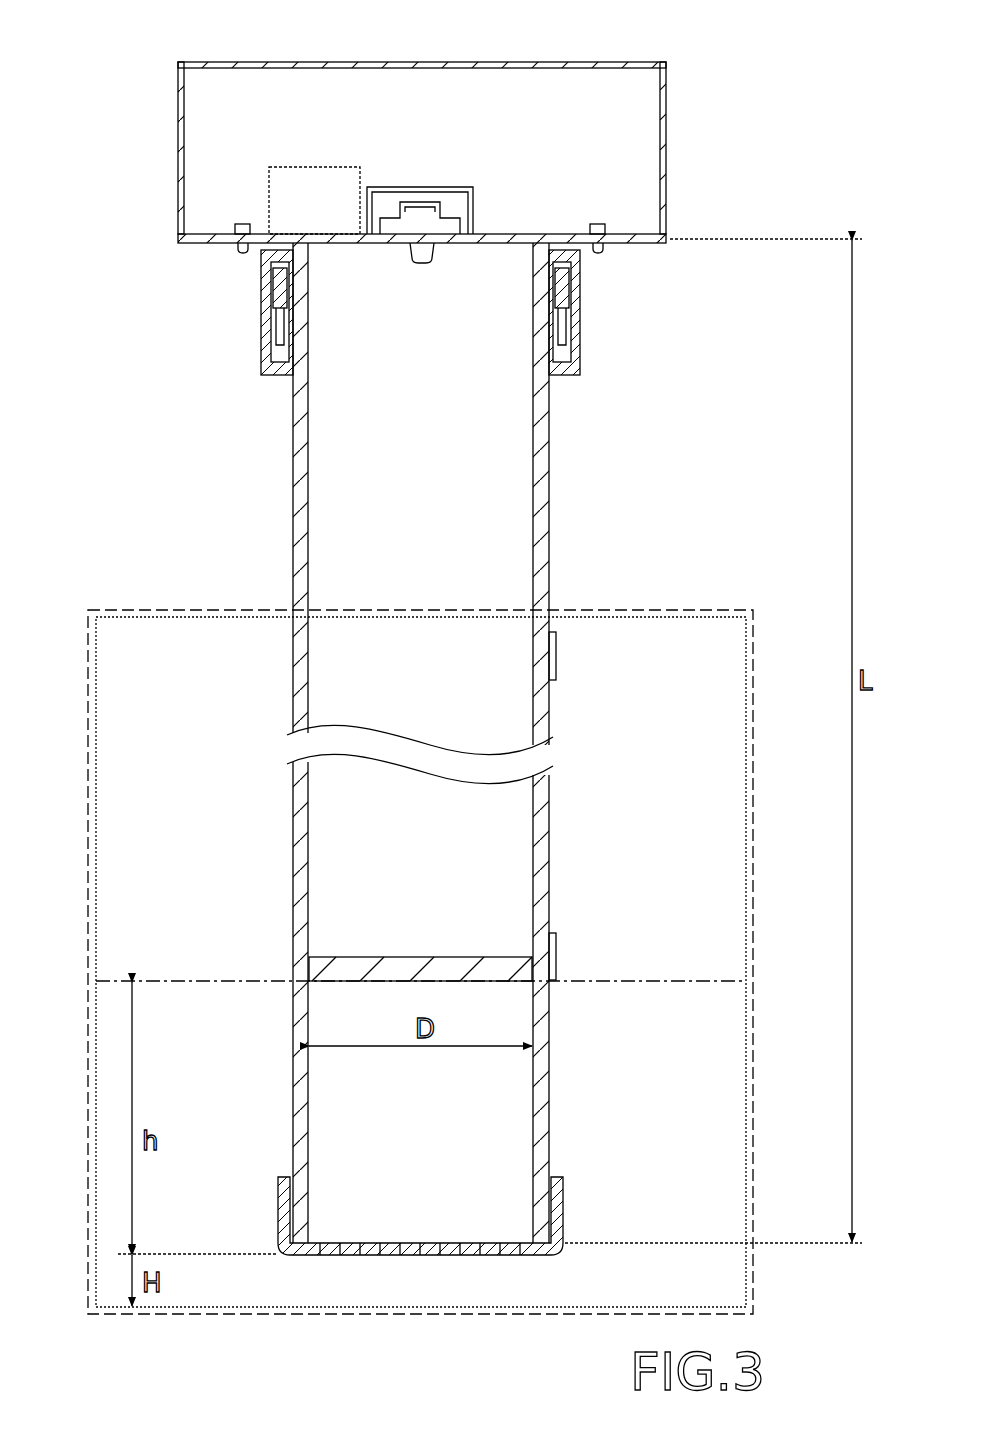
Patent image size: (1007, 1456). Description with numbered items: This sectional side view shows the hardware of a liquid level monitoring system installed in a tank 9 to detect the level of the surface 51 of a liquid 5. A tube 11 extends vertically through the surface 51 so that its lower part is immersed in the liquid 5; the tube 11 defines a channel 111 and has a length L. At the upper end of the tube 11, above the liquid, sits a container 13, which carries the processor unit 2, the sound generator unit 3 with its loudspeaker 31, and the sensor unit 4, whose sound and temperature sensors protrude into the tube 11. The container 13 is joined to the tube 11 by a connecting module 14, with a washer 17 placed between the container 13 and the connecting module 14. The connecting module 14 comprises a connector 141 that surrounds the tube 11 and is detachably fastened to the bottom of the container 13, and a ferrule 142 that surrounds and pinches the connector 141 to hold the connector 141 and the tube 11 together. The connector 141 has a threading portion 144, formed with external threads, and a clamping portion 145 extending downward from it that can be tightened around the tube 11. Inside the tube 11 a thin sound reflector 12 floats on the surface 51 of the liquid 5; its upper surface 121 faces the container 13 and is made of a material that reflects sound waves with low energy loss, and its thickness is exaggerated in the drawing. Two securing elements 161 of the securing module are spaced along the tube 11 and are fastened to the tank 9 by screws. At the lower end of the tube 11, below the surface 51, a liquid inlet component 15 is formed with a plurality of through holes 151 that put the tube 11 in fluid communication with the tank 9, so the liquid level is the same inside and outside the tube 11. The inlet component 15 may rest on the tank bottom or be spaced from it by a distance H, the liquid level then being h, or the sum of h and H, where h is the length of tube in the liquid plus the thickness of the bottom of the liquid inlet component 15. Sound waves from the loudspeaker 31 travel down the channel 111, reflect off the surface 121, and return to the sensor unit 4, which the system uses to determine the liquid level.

The processor unit 2 is at (315, 165).
The sound generator unit 3 is at (448, 200).
The loudspeaker 31 is at (445, 226).
The container 13 is at (668, 128).
The washer 17 is at (297, 238).
The connector 141 is at (215, 243).
The threading portion 144 is at (265, 283).
The clamping portion 145 is at (284, 322).
The sensor unit 4 is at (410, 262).
The ferrule 142 is at (580, 300).
The connecting module 14 is at (432, 355).
The channel 111 is at (500, 527).
The tube 11 is at (549, 578).
The securing element 161 is at (558, 655).
The surface 121 is at (352, 957).
The sound reflector 12 is at (448, 957).
The surface 51 is at (655, 981).
The liquid 5 is at (720, 1030).
The tank 9 is at (88, 1078).
The liquid inlet component 15 is at (565, 1178).
The through holes 151 is at (357, 1258).